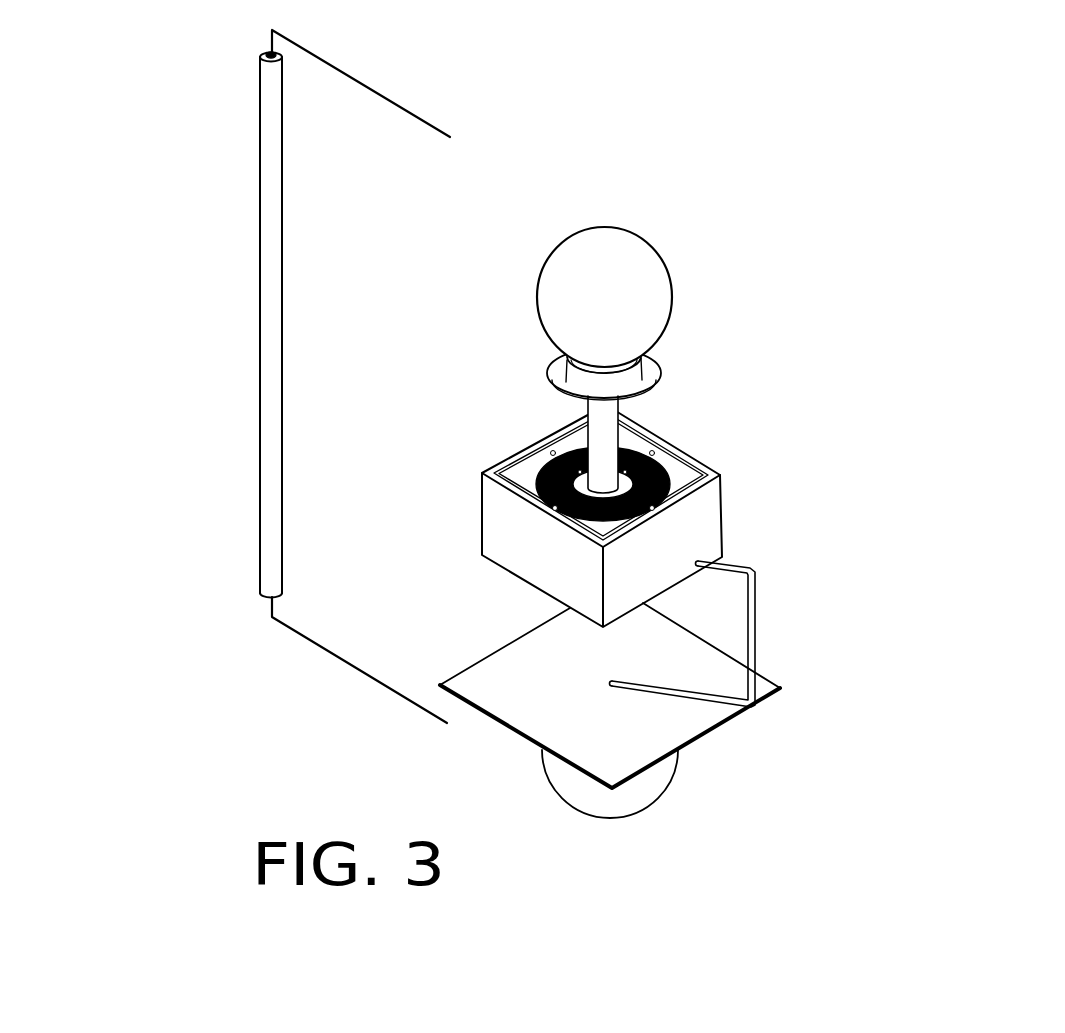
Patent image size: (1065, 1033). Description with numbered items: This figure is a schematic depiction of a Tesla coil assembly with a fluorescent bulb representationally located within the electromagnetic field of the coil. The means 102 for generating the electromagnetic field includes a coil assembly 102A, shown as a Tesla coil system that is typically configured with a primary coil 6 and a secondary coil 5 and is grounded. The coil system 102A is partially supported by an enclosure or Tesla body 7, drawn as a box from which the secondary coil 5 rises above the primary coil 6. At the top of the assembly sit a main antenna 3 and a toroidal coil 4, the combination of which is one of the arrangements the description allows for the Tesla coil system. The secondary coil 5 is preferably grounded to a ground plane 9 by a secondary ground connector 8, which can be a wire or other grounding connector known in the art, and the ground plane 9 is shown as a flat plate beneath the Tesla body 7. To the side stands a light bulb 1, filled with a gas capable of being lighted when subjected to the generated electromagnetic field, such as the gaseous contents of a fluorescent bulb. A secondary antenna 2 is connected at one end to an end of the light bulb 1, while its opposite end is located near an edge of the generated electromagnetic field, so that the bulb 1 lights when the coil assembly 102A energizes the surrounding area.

The light bulb 1 is at (270, 240).
The secondary antenna 2 is at (310, 643).
The main antenna 3 is at (625, 258).
The toroidal coil 4 is at (653, 367).
The secondary coil 5 is at (607, 412).
The primary coil 6 is at (675, 480).
The Tesla body 7 is at (690, 518).
The secondary ground connector 8 is at (753, 620).
The ground plane 9 is at (630, 743).
The means for generating an electromagnetic field 102 is at (446, 440).
The coil assembly 102A is at (516, 373).